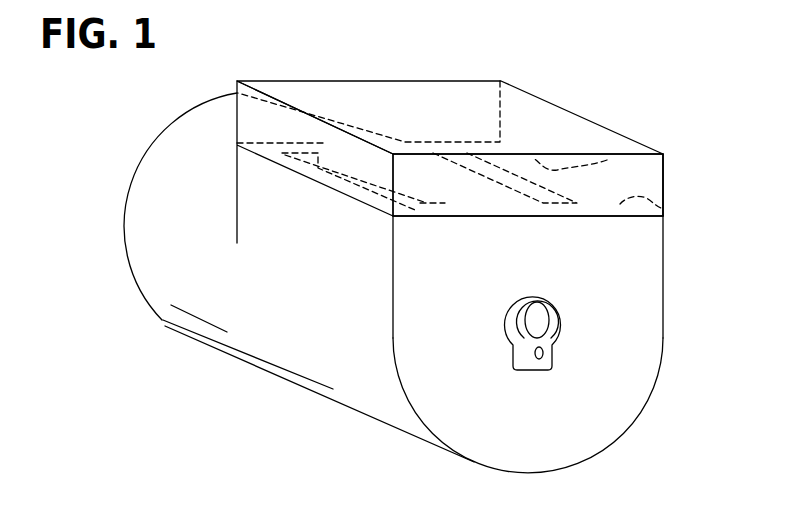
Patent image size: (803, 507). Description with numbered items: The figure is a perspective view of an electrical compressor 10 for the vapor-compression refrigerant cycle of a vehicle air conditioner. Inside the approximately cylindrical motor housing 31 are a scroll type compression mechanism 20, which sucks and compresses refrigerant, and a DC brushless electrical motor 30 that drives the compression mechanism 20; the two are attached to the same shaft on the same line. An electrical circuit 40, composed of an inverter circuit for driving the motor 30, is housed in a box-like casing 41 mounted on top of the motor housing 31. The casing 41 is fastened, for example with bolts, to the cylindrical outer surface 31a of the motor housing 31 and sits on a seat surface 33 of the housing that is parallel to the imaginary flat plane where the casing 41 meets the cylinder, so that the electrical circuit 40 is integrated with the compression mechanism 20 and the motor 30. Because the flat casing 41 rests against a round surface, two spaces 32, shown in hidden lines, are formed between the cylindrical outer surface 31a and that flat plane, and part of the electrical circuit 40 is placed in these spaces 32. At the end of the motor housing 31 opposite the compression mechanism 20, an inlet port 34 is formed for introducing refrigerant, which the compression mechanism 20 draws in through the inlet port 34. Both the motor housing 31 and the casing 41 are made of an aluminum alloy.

The electrical compressor 10 is at (535, 83).
The scroll type compression mechanism 20 is at (153, 177).
The DC brushless electrical motor 30 is at (321, 342).
The motor housing 31 is at (372, 398).
The cylindrical outer surface 31a is at (230, 340).
The spaces 32 is at (356, 177).
The seat surface 33 is at (663, 203).
The inlet port 34 is at (545, 321).
The electrical circuit 40 is at (548, 132).
The casing 41 is at (664, 170).